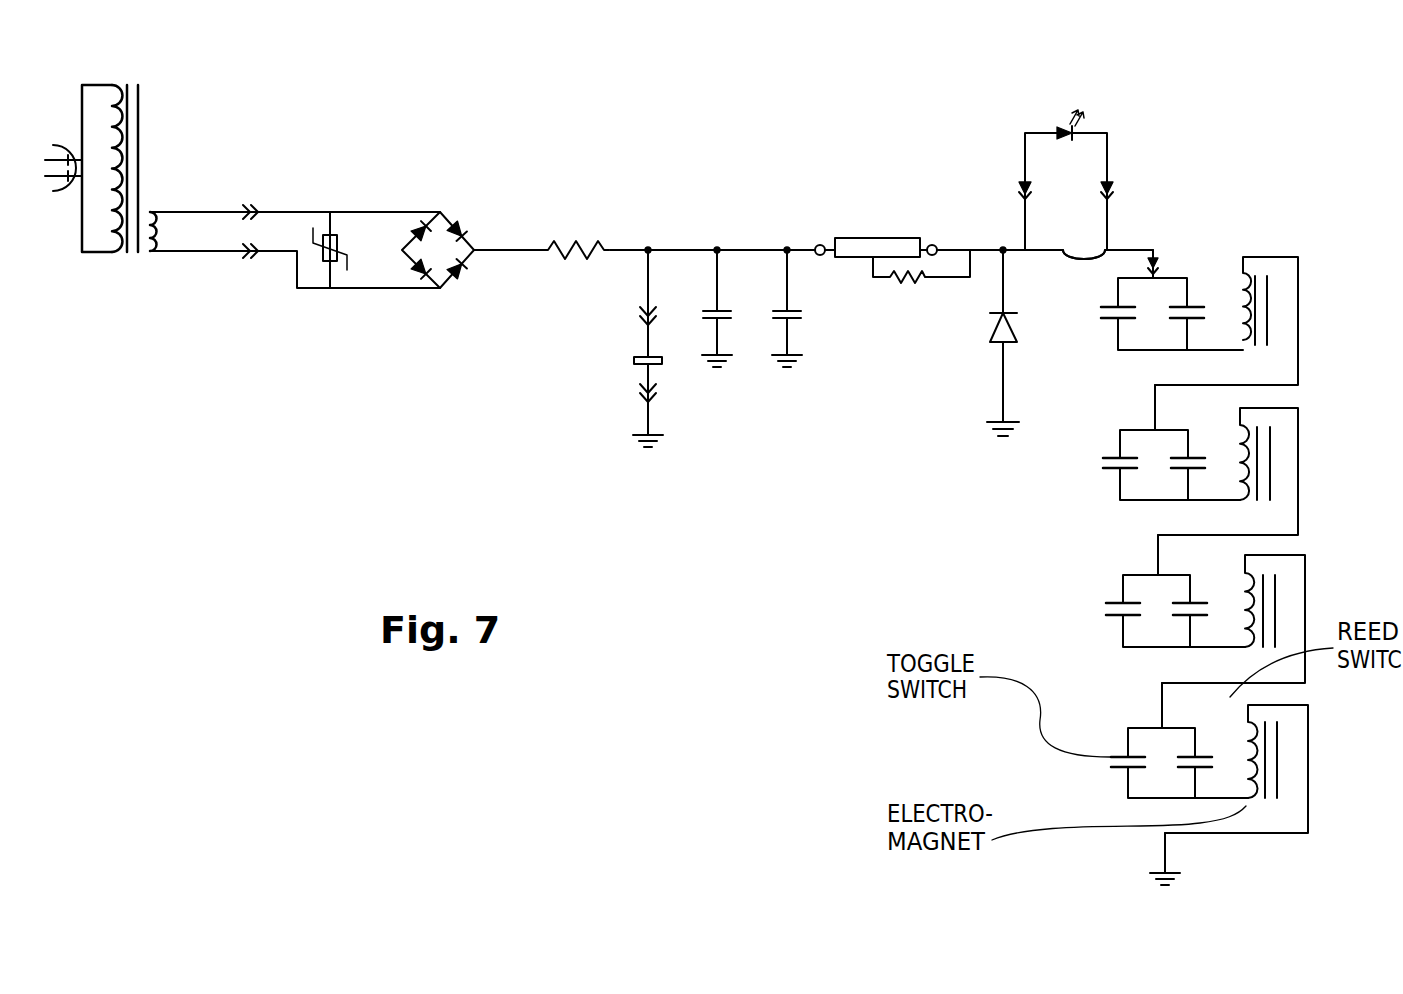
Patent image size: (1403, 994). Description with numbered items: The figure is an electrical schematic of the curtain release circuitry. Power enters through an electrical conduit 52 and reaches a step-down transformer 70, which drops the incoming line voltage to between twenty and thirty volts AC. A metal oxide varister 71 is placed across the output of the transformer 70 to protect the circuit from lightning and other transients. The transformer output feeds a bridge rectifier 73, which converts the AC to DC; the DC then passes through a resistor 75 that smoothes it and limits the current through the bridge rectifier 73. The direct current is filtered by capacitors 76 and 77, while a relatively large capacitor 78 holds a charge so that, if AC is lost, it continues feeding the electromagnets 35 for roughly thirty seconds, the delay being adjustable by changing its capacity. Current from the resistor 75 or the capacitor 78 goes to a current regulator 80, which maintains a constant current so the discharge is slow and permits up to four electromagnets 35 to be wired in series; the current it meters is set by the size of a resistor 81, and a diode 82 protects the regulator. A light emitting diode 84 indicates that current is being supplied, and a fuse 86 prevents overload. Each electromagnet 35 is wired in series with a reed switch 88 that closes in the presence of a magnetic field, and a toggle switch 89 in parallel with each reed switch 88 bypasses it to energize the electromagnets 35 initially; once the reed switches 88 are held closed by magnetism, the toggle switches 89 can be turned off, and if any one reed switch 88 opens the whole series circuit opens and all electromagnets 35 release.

The electrical conduit 52 is at (56, 153).
The step-down transformer 70 is at (94, 95).
The metal oxide varister 71 is at (331, 212).
The bridge rectifier 73 is at (443, 228).
The resistor 75 is at (609, 250).
The capacitor 78 is at (649, 250).
The capacitor 76 is at (718, 250).
The capacitor 77 is at (788, 250).
The current regulator 80 is at (860, 247).
The resistor 81 is at (907, 292).
The diode 82 is at (1008, 365).
The light emitting diode 84 is at (1073, 131).
The fuse 86 is at (1080, 262).
The electromagnet 35 is at (1262, 310).
The reed switch 88 is at (1193, 303).
The toggle switch 89 is at (1107, 320).